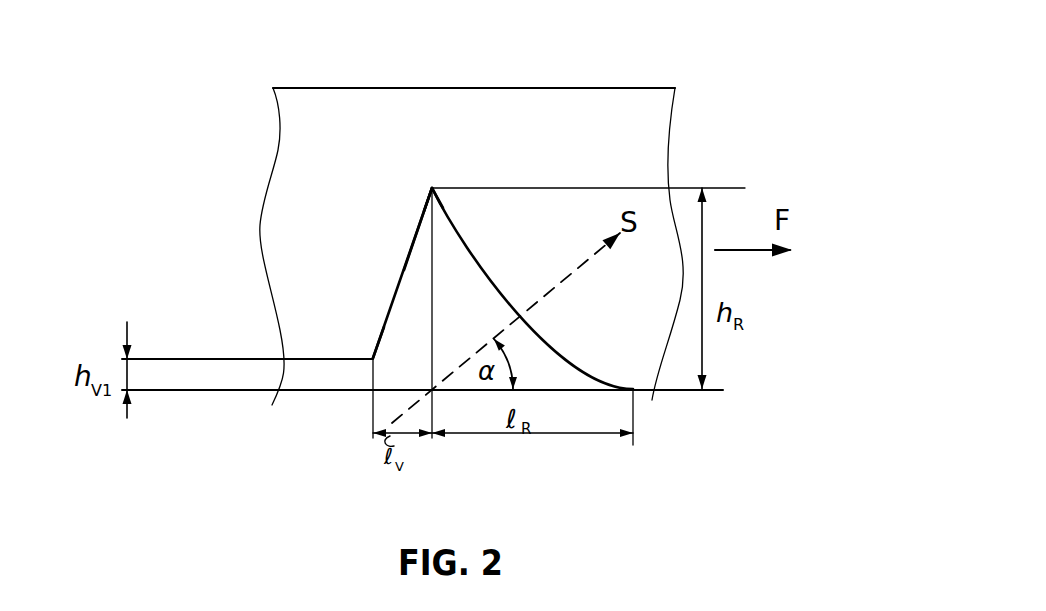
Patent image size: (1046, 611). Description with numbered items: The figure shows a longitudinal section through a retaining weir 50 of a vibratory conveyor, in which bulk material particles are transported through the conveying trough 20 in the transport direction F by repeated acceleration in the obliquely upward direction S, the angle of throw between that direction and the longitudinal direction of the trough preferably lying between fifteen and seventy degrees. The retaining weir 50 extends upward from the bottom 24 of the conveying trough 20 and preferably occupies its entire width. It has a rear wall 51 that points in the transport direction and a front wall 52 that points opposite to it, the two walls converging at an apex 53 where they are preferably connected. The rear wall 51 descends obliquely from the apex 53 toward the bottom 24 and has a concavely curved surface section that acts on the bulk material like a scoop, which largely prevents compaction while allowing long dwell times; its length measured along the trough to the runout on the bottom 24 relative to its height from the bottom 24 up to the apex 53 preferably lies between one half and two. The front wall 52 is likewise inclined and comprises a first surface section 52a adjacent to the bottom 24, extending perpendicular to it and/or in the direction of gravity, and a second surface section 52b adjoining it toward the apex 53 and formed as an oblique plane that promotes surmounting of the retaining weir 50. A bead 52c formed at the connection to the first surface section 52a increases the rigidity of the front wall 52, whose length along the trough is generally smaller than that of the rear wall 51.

The conveying trough 20 is at (597, 88).
The bottom 24 is at (310, 390).
The retaining weir 50 is at (463, 293).
The rear wall 51 is at (468, 256).
The front wall 52 is at (363, 268).
The first surface section 52a is at (370, 375).
The second surface section 52b is at (408, 233).
The bead 52c is at (373, 358).
The apex 53 is at (432, 188).